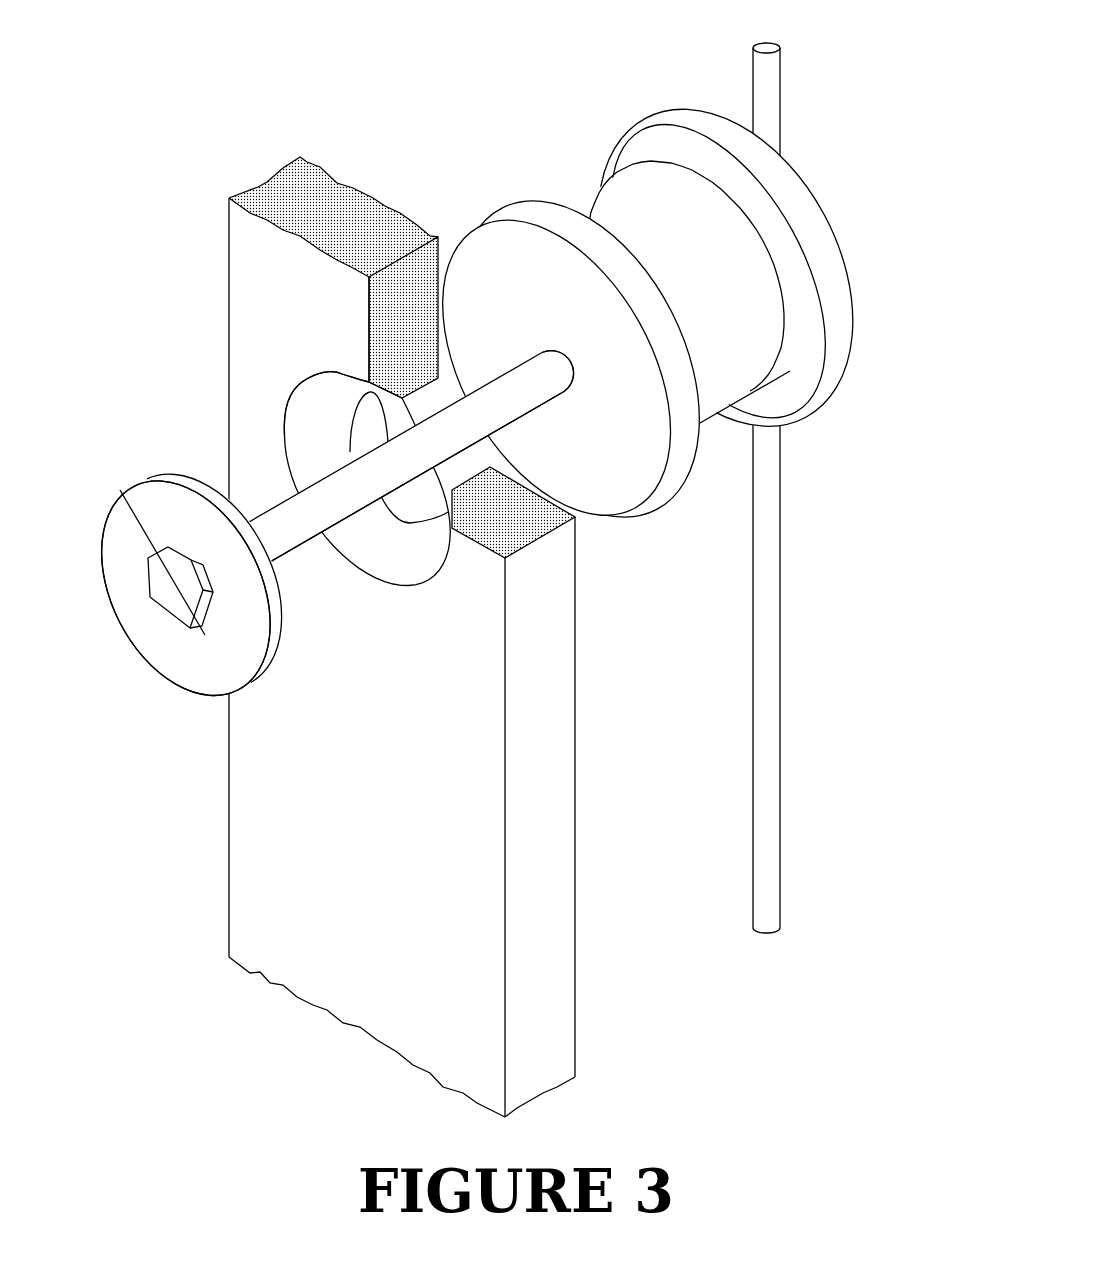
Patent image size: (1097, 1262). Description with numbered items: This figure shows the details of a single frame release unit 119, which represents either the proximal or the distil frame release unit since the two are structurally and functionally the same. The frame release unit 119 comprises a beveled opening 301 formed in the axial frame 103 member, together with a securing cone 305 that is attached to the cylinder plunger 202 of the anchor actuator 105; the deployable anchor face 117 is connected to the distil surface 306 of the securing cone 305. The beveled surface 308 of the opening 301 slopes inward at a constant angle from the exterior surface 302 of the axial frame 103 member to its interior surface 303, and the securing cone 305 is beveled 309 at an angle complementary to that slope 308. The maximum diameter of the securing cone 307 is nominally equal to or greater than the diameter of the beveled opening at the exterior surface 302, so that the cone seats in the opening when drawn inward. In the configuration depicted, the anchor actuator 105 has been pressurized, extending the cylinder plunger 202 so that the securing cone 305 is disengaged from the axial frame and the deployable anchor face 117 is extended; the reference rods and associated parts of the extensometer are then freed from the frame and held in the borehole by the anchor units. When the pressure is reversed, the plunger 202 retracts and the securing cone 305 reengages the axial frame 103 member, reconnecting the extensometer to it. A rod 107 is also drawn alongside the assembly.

The axial frame member 103 is at (257, 326).
The anchor actuator 105 is at (521, 161).
The rod 107 is at (752, 762).
The deployable anchor face 117 is at (176, 605).
The frame release unit 119 is at (428, 551).
The cylinder plunger 202 is at (548, 373).
The beveled opening 301 is at (287, 421).
The exterior surface 302 is at (300, 270).
The interior surface 303 is at (337, 173).
The securing cone 305 is at (228, 645).
The distil surface 306 is at (238, 660).
The maximum diameter of the securing cone 307 is at (235, 662).
The beveled surface 308 is at (313, 448).
The bevel of the securing cone 309 is at (290, 572).